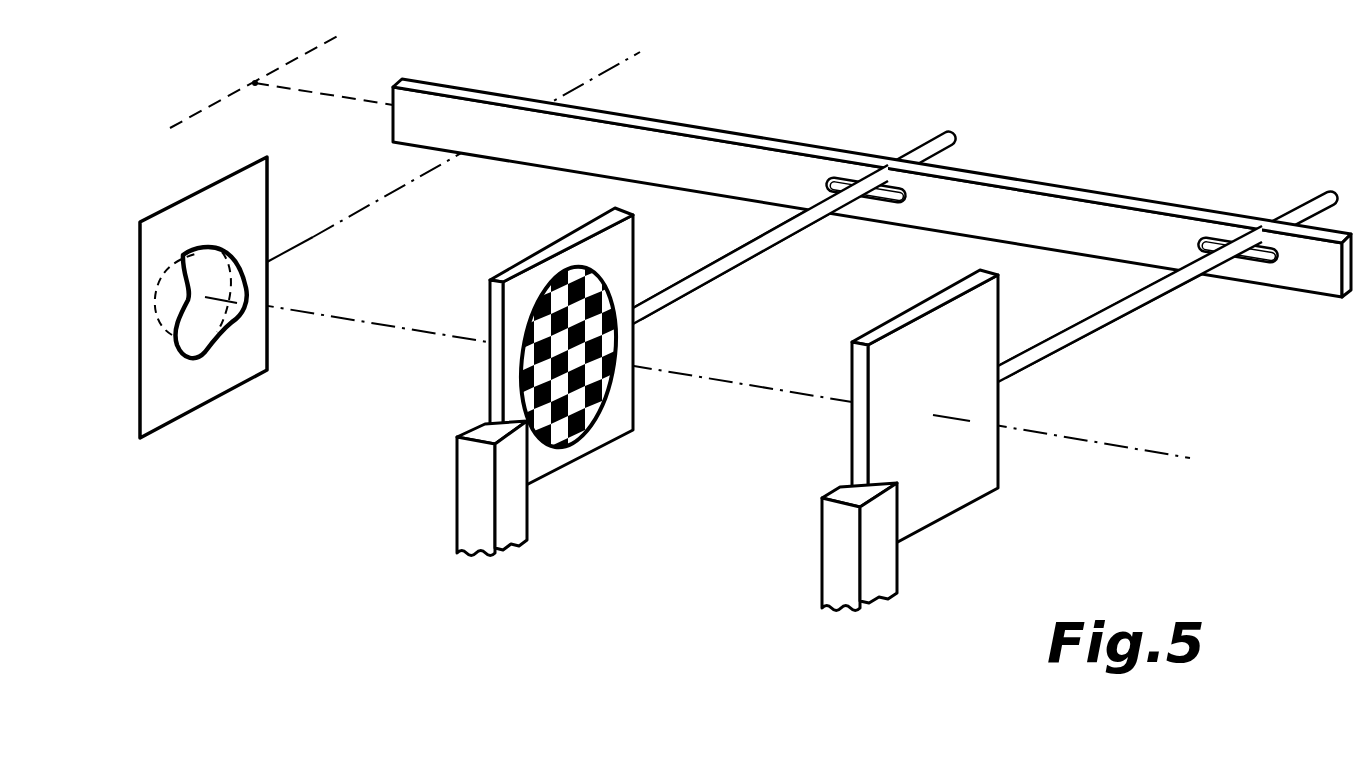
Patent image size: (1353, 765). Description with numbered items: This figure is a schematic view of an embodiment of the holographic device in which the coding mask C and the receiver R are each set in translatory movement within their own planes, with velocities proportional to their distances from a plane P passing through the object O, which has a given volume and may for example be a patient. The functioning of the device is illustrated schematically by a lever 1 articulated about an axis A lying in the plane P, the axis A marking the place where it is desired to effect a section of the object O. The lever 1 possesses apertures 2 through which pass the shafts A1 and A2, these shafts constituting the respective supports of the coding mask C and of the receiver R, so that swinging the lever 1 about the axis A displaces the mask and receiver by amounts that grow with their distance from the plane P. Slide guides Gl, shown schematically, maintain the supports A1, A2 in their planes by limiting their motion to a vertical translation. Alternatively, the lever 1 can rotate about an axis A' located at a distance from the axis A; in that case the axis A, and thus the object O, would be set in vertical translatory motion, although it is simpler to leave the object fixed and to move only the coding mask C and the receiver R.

The lever 1 is at (700, 152).
The apertures 2 is at (842, 180).
The axis A is at (720, 255).
The axis A' is at (281, 80).
The shaft A1 is at (748, 241).
The shaft A2 is at (1108, 306).
The plane P is at (203, 297).
The object O is at (201, 315).
The coding mask C is at (563, 352).
The receiver R is at (925, 414).
The slide guides Gl is at (512, 533).